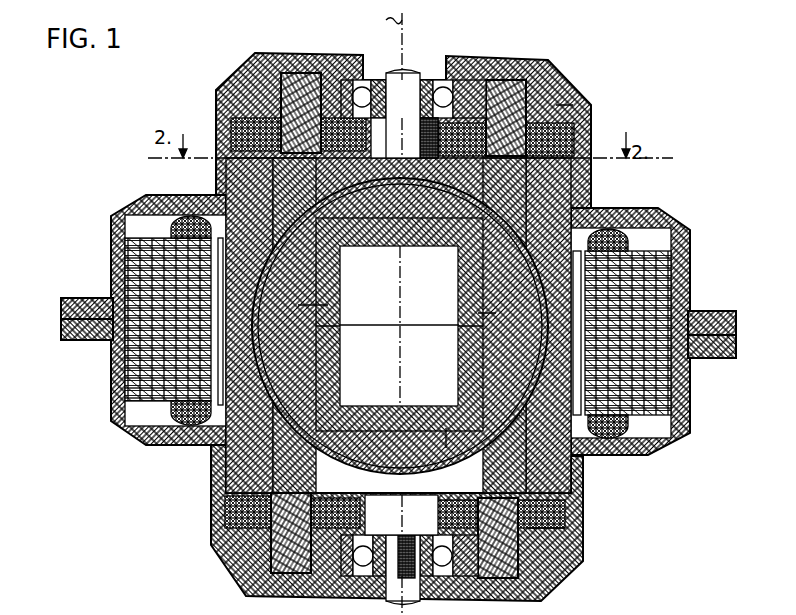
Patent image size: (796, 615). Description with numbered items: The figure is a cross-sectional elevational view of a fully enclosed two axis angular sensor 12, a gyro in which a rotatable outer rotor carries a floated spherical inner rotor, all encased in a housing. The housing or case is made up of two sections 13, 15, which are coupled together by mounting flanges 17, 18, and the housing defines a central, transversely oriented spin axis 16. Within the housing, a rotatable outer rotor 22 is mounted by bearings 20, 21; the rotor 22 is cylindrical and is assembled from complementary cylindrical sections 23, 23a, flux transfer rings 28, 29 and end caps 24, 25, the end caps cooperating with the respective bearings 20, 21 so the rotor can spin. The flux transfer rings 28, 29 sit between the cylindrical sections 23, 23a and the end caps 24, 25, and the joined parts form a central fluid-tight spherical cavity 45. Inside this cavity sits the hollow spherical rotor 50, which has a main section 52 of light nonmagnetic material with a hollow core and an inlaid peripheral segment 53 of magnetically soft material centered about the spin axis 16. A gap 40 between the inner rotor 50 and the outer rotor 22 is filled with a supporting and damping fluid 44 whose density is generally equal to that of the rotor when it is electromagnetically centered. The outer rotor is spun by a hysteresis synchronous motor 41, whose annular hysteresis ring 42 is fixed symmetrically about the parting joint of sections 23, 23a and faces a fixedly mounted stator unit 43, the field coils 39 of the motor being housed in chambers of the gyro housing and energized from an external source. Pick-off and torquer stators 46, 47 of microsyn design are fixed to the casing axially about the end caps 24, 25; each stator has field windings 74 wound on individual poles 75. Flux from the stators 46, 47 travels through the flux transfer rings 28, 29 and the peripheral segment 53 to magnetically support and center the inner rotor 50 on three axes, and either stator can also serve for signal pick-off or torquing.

The two axis angular sensor 12 is at (594, 98).
The housing section 13 is at (206, 536).
The housing section 15 is at (223, 80).
The spin axis 16 is at (382, 20).
The mounting flange 17 is at (712, 305).
The mounting flange 18 is at (63, 334).
The bearing 20 is at (430, 72).
The bearing 21 is at (357, 567).
The rotatable outer rotor 22 is at (566, 166).
The cylindrical section 23 is at (251, 177).
The cylindrical section 23a is at (217, 437).
The end cap 24 is at (395, 150).
The end cap 25 is at (388, 516).
The flux transfer ring 28 is at (241, 158).
The flux transfer ring 29 is at (278, 460).
The field coils 39 is at (162, 206).
The gap 40 is at (255, 378).
The hysteresis synchronous motor 41 is at (126, 268).
The hysteresis ring 42 is at (186, 195).
The stator unit 43 is at (122, 238).
The supporting fluid 44 is at (376, 150).
The spherical cavity 45 is at (586, 211).
The pick-off and torquer stator 46 is at (292, 68).
The pick-off and torquer stator 47 is at (266, 546).
The spherical rotor 50 is at (405, 223).
The main section 52 is at (438, 421).
The peripheral segment 53 is at (290, 297).
The field windings 74 is at (549, 97).
The pole 75 is at (558, 131).